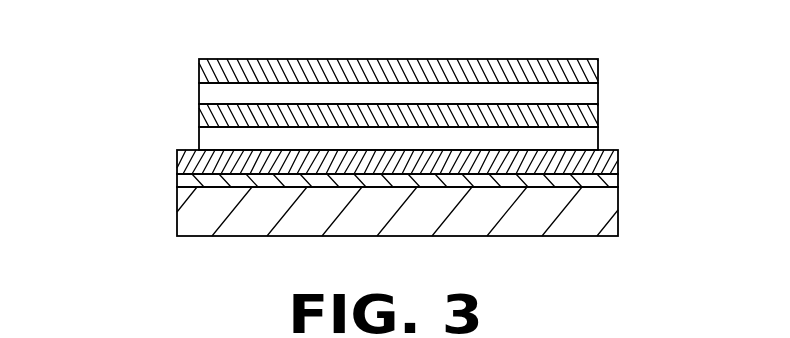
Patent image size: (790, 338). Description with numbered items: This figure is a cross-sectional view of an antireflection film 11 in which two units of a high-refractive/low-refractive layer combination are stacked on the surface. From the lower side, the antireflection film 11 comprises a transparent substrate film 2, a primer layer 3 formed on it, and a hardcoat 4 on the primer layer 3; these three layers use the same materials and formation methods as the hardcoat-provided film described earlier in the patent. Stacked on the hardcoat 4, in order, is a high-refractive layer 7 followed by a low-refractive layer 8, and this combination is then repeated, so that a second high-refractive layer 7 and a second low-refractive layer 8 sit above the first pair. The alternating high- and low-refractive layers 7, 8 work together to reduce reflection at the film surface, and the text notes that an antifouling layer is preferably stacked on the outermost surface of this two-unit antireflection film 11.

The antireflection film 11 is at (158, 152).
The transparent substrate film 2 is at (588, 217).
The primer layer 3 is at (605, 179).
The hardcoat 4 is at (606, 157).
The high-refractive layer 7 is at (595, 91).
The low-refractive layer 8 is at (595, 66).